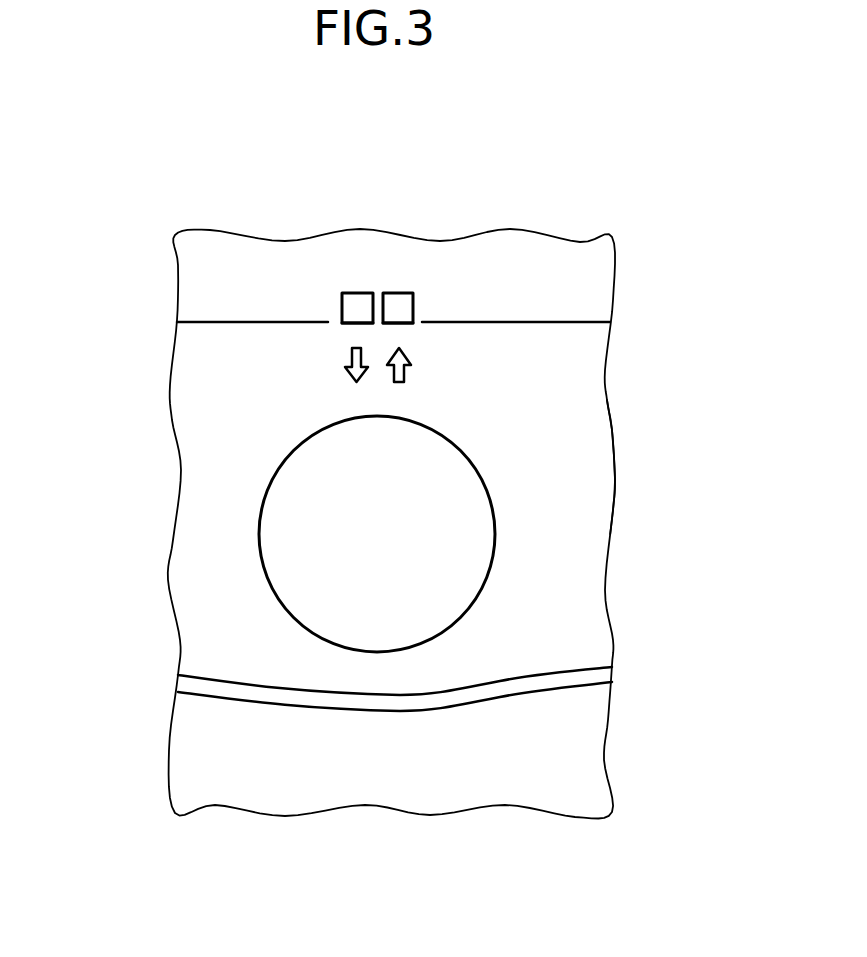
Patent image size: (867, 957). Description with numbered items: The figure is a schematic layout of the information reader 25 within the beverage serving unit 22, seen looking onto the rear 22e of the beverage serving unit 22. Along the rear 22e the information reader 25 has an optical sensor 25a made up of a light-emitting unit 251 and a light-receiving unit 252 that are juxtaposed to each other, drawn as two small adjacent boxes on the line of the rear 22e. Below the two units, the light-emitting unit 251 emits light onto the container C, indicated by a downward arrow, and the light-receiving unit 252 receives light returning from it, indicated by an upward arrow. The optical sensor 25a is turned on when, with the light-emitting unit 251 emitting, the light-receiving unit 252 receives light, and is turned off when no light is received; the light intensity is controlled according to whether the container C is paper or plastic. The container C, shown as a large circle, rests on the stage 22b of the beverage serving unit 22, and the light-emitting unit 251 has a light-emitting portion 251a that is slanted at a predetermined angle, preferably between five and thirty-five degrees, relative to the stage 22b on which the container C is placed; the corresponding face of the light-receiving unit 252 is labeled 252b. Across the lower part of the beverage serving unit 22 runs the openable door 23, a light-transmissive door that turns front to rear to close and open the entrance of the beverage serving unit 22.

The beverage serving unit 22 is at (580, 388).
The stage 22b is at (606, 470).
The rear 22e is at (243, 323).
The information reader 25 is at (384, 200).
The optical sensor 25a is at (463, 140).
The light-emitting unit 251 is at (356, 293).
The light-receiving unit 252 is at (403, 293).
The light-emitting portion 251a is at (350, 325).
The light receiving surface 252b is at (403, 325).
The container C is at (496, 534).
The openable door 23 is at (557, 695).